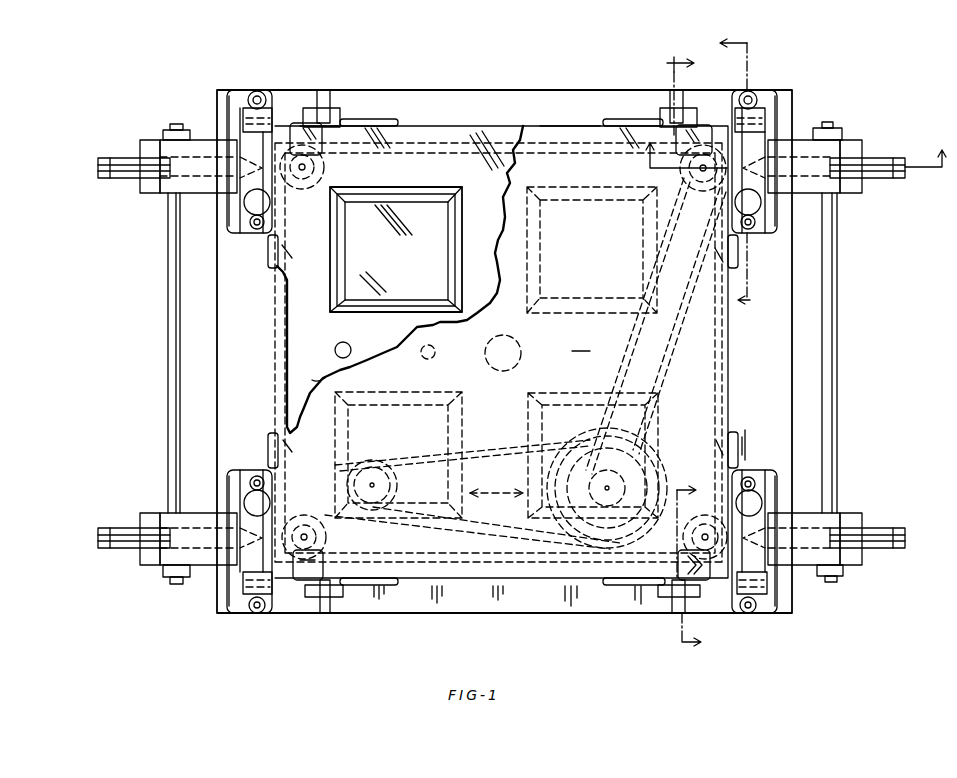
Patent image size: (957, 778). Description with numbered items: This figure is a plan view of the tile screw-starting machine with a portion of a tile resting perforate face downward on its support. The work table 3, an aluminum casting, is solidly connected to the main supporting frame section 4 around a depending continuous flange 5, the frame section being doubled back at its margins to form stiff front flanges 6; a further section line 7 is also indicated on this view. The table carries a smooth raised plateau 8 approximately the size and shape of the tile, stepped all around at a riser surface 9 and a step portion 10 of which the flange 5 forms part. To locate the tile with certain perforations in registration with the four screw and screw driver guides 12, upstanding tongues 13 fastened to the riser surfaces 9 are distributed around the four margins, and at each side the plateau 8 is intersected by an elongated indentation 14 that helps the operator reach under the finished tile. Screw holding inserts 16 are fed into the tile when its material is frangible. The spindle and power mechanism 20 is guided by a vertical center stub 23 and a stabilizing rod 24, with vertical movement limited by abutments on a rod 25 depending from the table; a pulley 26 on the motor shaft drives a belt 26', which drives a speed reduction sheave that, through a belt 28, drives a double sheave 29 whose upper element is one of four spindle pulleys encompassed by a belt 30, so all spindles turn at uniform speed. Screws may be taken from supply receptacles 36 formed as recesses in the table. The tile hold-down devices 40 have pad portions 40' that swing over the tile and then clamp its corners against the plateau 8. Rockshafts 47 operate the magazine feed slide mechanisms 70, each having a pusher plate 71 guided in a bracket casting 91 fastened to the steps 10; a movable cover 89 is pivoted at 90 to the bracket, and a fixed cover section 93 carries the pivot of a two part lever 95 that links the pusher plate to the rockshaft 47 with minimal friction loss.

The work table 3 is at (570, 88).
The main supporting frame section 4 is at (698, 353).
The depending continuous flange 5 is at (694, 530).
The front flange 6 is at (789, 149).
The section line 7 is at (738, 175).
The plateau 8 is at (317, 331).
The step riser surface 9 is at (560, 124).
The step portion 10 is at (467, 113).
The screw and screw driver guide 12 is at (312, 168).
The upstanding tongue 13 is at (383, 119).
The indentation 14 is at (282, 363).
The screw holding insert 16 is at (270, 165).
The spindle and power mechanism 20 is at (503, 493).
The vertical center stub 23 is at (520, 362).
The stabilizing rod 24 is at (351, 350).
The rod 25 is at (433, 358).
The pulley 26 is at (391, 485).
The belt 26' is at (467, 533).
The belt 28 is at (670, 366).
The double sheave 29 is at (695, 193).
The belt 30 is at (492, 140).
The supply receptacle 36 is at (418, 269).
The tile hold-down device 40 is at (490, 351).
The pad portion 40' is at (508, 339).
The rockshaft 47 is at (170, 392).
The magazine feed slide mechanism 70 is at (186, 116).
The pusher plate 71 is at (193, 181).
The movable cover 89 is at (243, 197).
The pivot 90 is at (248, 120).
The pusher plate guide bracket casting 91 is at (229, 98).
The fixed cover section 93 is at (166, 189).
The two part lever 95 is at (122, 158).